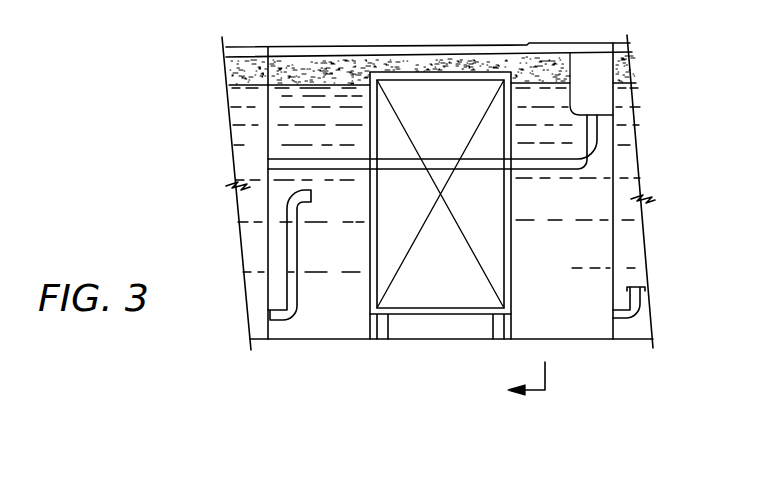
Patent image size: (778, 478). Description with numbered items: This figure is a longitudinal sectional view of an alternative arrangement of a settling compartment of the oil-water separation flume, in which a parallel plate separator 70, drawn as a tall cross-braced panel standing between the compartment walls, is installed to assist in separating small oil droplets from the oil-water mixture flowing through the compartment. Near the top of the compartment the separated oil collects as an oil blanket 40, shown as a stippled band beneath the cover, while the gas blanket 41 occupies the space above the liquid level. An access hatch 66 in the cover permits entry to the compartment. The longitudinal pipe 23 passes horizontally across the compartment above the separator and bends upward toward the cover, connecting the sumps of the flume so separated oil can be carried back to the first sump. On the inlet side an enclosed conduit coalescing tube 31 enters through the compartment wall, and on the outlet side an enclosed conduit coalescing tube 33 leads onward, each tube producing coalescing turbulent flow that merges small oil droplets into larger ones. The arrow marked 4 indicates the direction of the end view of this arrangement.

The oil blanket 40 is at (293, 65).
The gas blanket 41 is at (343, 47).
The access hatch 66 is at (445, 44).
The parallel plate separator 70 is at (512, 268).
The longitudinal pipe 23 is at (558, 170).
The enclosed conduit coalescing tube 31 is at (298, 290).
The enclosed conduit coalescing tube 33 is at (644, 290).
The section line 4- 4 is at (518, 382).